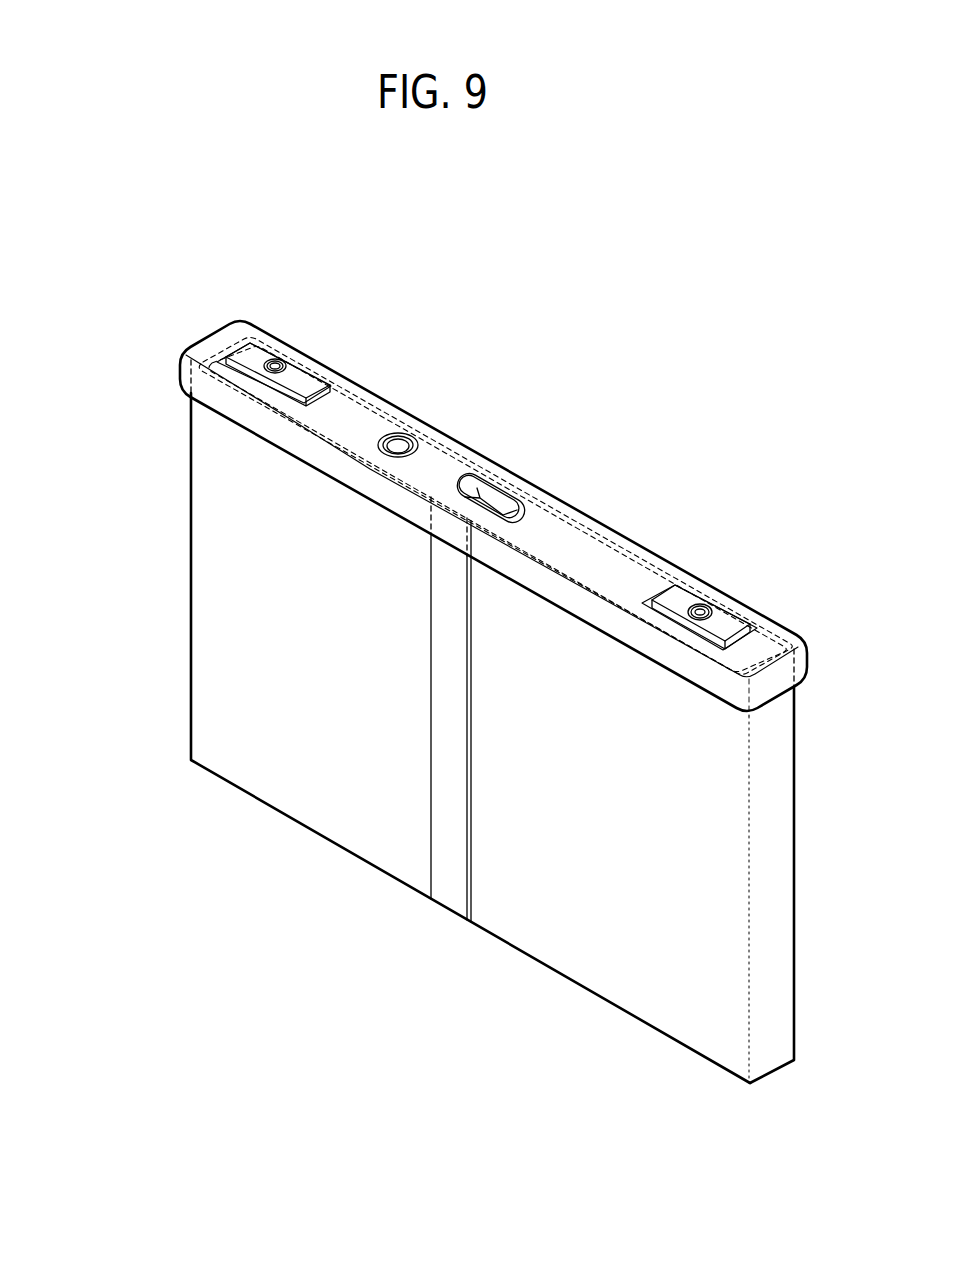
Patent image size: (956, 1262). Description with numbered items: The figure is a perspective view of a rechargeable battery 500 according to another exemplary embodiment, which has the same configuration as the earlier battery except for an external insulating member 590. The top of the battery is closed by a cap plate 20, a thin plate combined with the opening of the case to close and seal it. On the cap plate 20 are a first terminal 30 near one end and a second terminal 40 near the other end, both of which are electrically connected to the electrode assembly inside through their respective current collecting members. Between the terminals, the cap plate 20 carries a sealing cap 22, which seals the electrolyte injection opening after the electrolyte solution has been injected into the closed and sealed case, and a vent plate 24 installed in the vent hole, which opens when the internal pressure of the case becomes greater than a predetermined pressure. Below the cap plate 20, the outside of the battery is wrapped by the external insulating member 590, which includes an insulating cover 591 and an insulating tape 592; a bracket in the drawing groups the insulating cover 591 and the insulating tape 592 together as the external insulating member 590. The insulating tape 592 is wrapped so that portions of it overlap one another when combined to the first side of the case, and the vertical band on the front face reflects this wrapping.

The rechargeable battery 500 is at (523, 330).
The cap plate 20 is at (634, 547).
The sealing cap 22 is at (401, 445).
The vent plate 24 is at (493, 496).
The first terminal 30 is at (303, 366).
The second terminal 40 is at (727, 612).
The external insulating member 590 is at (95, 447).
The insulating cover 591 is at (263, 421).
The insulating tape 592 is at (226, 587).